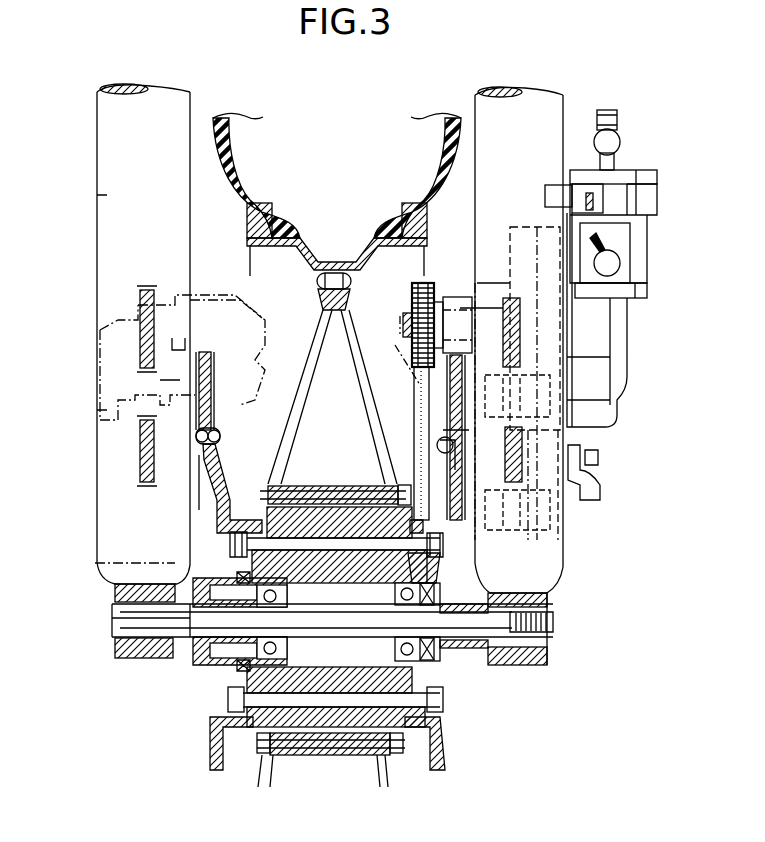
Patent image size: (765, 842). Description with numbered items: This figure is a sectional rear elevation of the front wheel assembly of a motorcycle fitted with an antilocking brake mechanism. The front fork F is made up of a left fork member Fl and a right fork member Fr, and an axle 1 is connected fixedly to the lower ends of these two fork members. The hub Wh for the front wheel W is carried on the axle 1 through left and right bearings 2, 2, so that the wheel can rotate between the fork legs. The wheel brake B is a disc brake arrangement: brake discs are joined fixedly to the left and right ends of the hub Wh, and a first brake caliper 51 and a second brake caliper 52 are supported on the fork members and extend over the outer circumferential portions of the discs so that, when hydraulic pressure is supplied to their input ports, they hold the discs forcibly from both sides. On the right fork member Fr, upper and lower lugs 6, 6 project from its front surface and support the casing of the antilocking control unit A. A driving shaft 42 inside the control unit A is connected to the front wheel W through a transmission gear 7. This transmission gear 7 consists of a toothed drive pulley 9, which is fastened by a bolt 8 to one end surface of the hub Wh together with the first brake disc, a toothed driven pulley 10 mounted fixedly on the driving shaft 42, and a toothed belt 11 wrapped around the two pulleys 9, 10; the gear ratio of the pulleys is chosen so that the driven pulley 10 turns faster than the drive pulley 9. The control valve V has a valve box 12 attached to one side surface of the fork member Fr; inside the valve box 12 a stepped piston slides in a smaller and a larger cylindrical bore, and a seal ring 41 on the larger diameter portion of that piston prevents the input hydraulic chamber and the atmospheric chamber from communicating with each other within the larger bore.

The front fork F is at (296, 309).
The left fork member Fl is at (97, 196).
The right fork member Fr is at (475, 103).
The front wheel W is at (244, 112).
The hub Wh is at (328, 486).
The wheel brake B is at (183, 298).
The control valve V is at (625, 199).
The antilocking control unit A is at (630, 366).
The axle 1 is at (158, 657).
The bearings 2 is at (255, 590).
The lugs 6 is at (530, 520).
The transmission gear 7 is at (425, 282).
The bolt 8 is at (442, 556).
The toothed drive pulley 9 is at (443, 530).
The toothed driven pulley 10 is at (412, 296).
The toothed belt 11 is at (414, 432).
The valve box 12 is at (657, 197).
The seal ring 41 is at (462, 420).
The driving shaft 42 is at (208, 380).
The first brake caliper 51 is at (490, 300).
The second brake caliper 52 is at (218, 300).